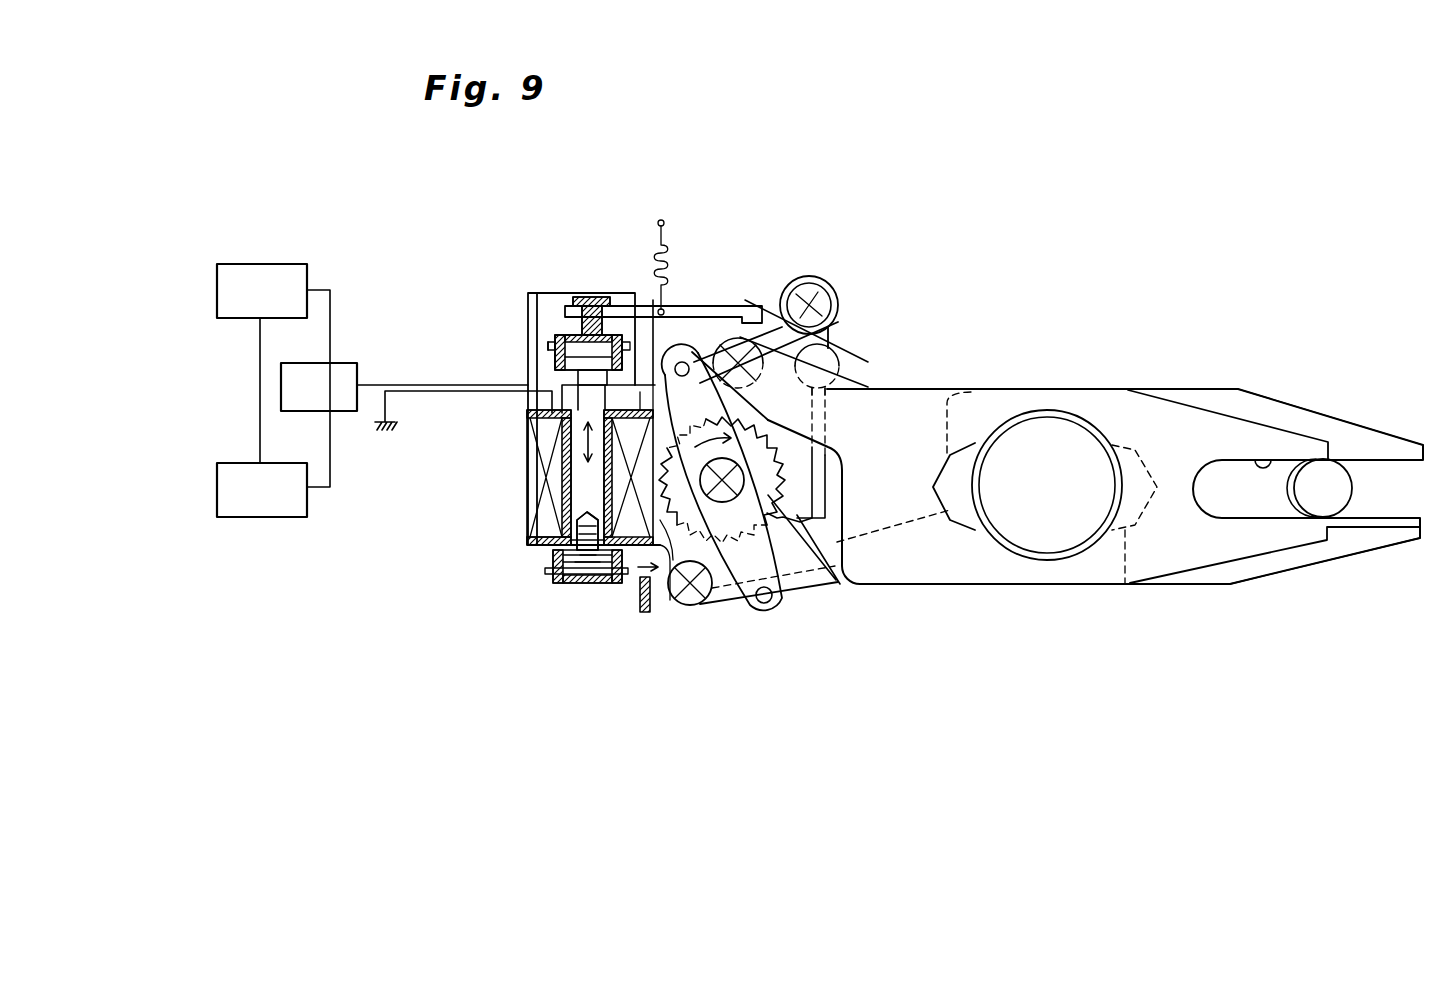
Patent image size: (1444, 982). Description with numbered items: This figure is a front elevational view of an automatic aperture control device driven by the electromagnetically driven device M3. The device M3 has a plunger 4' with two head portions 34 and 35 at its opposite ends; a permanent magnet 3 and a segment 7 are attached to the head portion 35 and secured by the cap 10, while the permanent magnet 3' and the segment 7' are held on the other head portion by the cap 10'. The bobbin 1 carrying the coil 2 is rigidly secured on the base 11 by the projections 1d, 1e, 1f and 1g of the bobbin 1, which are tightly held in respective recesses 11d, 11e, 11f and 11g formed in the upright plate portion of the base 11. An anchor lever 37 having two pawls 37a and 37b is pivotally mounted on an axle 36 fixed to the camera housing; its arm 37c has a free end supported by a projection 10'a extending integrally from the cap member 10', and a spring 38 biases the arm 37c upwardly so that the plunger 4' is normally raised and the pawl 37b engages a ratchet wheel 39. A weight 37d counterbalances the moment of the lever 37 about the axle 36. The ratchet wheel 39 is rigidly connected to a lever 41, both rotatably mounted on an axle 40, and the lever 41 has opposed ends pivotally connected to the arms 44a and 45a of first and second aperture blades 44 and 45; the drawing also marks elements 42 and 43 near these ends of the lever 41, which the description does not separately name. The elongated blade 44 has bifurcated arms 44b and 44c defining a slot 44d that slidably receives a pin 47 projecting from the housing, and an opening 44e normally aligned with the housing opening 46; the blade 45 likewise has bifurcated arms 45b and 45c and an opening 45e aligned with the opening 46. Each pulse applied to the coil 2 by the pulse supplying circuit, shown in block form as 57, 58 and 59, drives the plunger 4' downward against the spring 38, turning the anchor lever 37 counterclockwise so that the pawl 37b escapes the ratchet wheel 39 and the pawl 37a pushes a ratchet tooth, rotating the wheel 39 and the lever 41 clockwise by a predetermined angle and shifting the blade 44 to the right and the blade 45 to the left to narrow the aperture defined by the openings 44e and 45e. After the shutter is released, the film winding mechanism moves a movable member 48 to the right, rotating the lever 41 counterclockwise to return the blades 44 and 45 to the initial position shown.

The pulse generator 57 is at (260, 264).
The gate 58 is at (338, 364).
The pulse controller 59 is at (260, 518).
The bobbin 1 is at (535, 547).
The projection 1d is at (643, 547).
The projection 1e is at (528, 541).
The projection 1f is at (656, 395).
The projection 1g is at (530, 411).
The coil 2 is at (542, 493).
The permanent magnet 3 is at (582, 610).
The permanent magnet 3' is at (534, 344).
The plunger 4' is at (521, 486).
The segment 7 is at (584, 609).
The segment 7' is at (538, 287).
The cap 10 is at (595, 636).
The cap member 10' is at (492, 317).
The projection 10'a is at (555, 289).
The base 11 is at (565, 293).
The recess 11d is at (660, 530).
The recess 11e is at (530, 528).
The recess 11f is at (641, 392).
The recess 11g is at (532, 427).
The head portion 34 is at (579, 372).
The head portion 35 is at (562, 554).
The axle 36 is at (836, 292).
The anchor lever 37 is at (742, 306).
The pawl 37a is at (708, 562).
The pawl 37b is at (818, 570).
The arm 37c is at (617, 305).
The weight 37d is at (840, 371).
The spring 38 is at (664, 248).
The ratchet wheel 39 is at (793, 588).
The axle 40 is at (745, 480).
The lever 41 is at (834, 359).
The pivot pin 42 is at (686, 360).
The pivot pin 43 is at (764, 603).
The first aperture blade 44 is at (927, 403).
The arm 44a is at (830, 346).
The bifurcated arm 44b is at (1262, 540).
The bifurcated arm 44c is at (1245, 435).
The slot 44d is at (1275, 458).
The opening 44e is at (962, 523).
The second aperture blade 45 is at (1210, 582).
The arm 45a is at (797, 590).
The bifurcated arm 45b is at (1385, 536).
The bifurcated arm 45c is at (1365, 443).
The opening 45e is at (1125, 583).
The opening 46 is at (1033, 542).
The pin 47 is at (1330, 500).
The movable member 48 is at (645, 613).
The electromagnetically driven device M3 is at (520, 488).